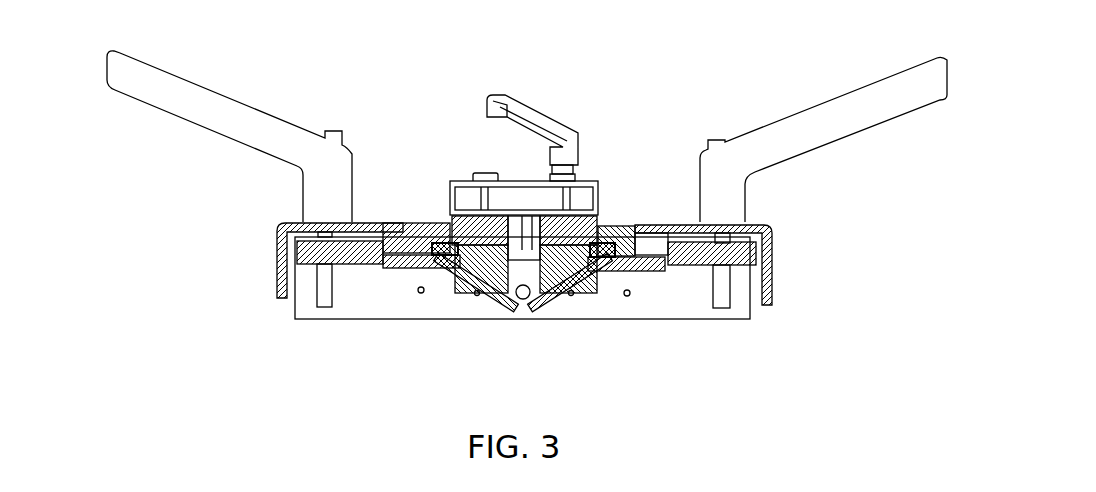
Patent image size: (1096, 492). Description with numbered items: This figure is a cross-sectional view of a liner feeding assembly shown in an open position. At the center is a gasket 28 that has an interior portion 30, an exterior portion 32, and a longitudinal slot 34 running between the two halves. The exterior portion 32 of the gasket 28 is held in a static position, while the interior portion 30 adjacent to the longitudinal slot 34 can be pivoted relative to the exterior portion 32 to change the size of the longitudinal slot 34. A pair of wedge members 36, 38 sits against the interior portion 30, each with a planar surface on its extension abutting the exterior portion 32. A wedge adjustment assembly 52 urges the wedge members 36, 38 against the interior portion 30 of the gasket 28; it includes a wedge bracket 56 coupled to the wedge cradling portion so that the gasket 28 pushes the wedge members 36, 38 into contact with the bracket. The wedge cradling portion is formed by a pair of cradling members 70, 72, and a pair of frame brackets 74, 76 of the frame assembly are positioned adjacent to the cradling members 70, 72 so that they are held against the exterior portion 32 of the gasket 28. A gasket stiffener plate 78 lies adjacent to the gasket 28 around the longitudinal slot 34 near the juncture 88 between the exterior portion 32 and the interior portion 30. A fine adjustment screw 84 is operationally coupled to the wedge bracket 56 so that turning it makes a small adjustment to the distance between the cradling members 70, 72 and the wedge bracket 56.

The gasket 28 is at (630, 262).
The interior portion 30 is at (500, 305).
The exterior portion 32 is at (404, 270).
The longitudinal slot 34 is at (521, 325).
The wedge member 36 is at (445, 222).
The wedge member 38 is at (580, 222).
The wedge adjustment assembly 52 is at (553, 78).
The wedge bracket 56 is at (512, 181).
The cradling member 70 is at (372, 266).
The cradling member 72 is at (677, 268).
The frame bracket 74 is at (285, 228).
The frame bracket 76 is at (770, 230).
The gasket stiffener plate 78 is at (438, 243).
The fine adjustment screw 84 is at (483, 173).
The juncture 88 is at (445, 272).